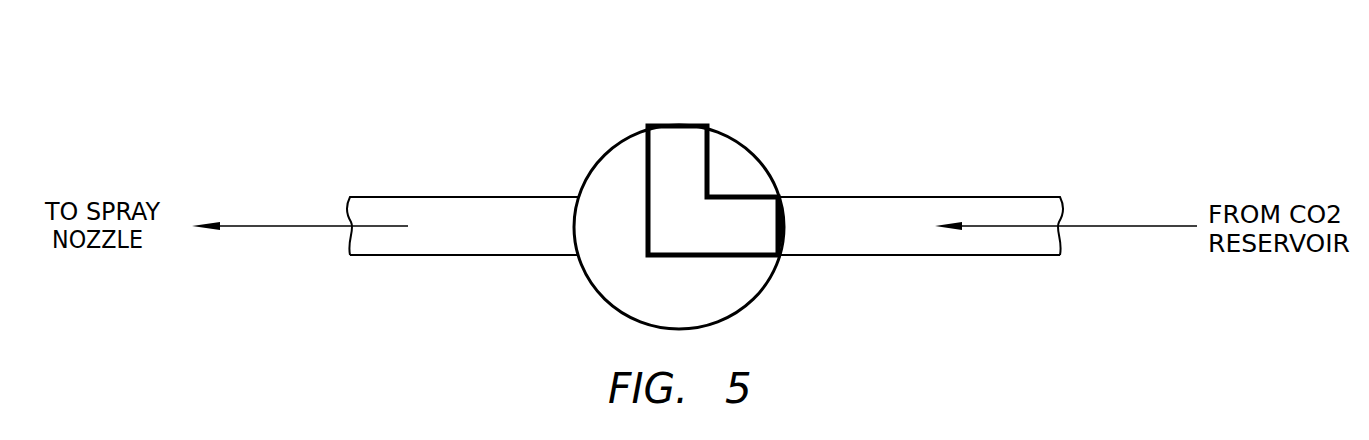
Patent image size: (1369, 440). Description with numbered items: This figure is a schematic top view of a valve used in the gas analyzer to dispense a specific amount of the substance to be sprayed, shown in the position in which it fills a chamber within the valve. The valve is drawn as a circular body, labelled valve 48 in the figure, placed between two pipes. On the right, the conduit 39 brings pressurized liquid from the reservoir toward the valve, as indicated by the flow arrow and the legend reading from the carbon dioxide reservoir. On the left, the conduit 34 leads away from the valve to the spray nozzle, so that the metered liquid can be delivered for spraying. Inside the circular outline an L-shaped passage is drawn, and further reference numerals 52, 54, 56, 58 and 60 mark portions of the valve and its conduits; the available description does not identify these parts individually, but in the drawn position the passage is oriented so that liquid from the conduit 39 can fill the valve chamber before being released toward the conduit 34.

The conduit 34 is at (462, 229).
The conduit 39 is at (921, 230).
The valve assembly 48 is at (695, 185).
The valve outlet port 52 is at (787, 225).
The L-shaped valve passage 54 is at (677, 125).
The inlet conduit wall 56 is at (882, 238).
The outlet conduit wall 58 is at (492, 235).
The valve body 60 is at (598, 158).